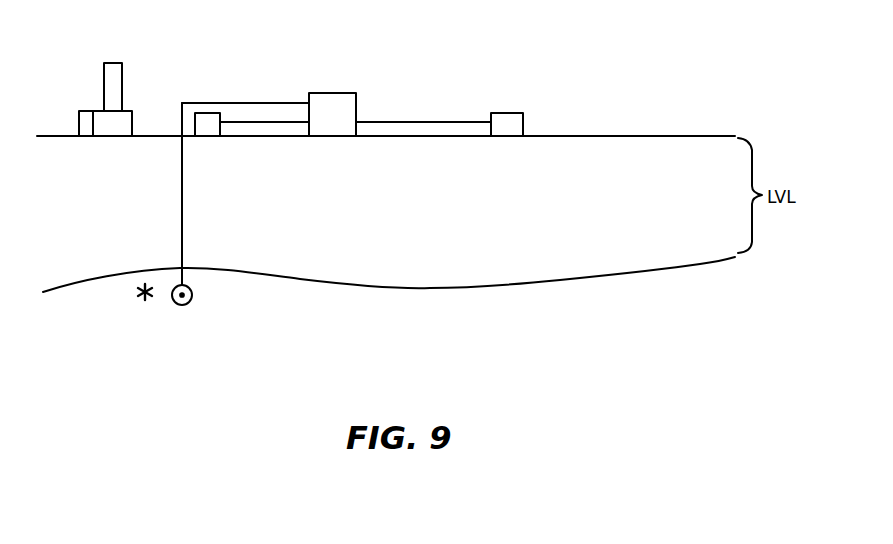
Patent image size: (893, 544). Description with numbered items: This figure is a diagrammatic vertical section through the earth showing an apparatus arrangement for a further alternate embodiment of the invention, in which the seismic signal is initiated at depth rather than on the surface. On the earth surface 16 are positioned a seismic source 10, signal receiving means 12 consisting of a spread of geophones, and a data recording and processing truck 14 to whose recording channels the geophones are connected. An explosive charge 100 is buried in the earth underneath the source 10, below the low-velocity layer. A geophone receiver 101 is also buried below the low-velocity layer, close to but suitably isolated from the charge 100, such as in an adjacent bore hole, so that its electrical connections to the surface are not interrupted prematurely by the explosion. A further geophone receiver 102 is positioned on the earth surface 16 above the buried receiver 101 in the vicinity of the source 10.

The seismic source 10 is at (118, 60).
The signal receiving means 12 is at (508, 118).
The data recording and processing truck 14 is at (332, 105).
The earth surface 16 is at (657, 135).
The explosive charge 100 is at (145, 300).
The geophone receiver 101 is at (193, 291).
The geophone receiver 102 is at (208, 120).